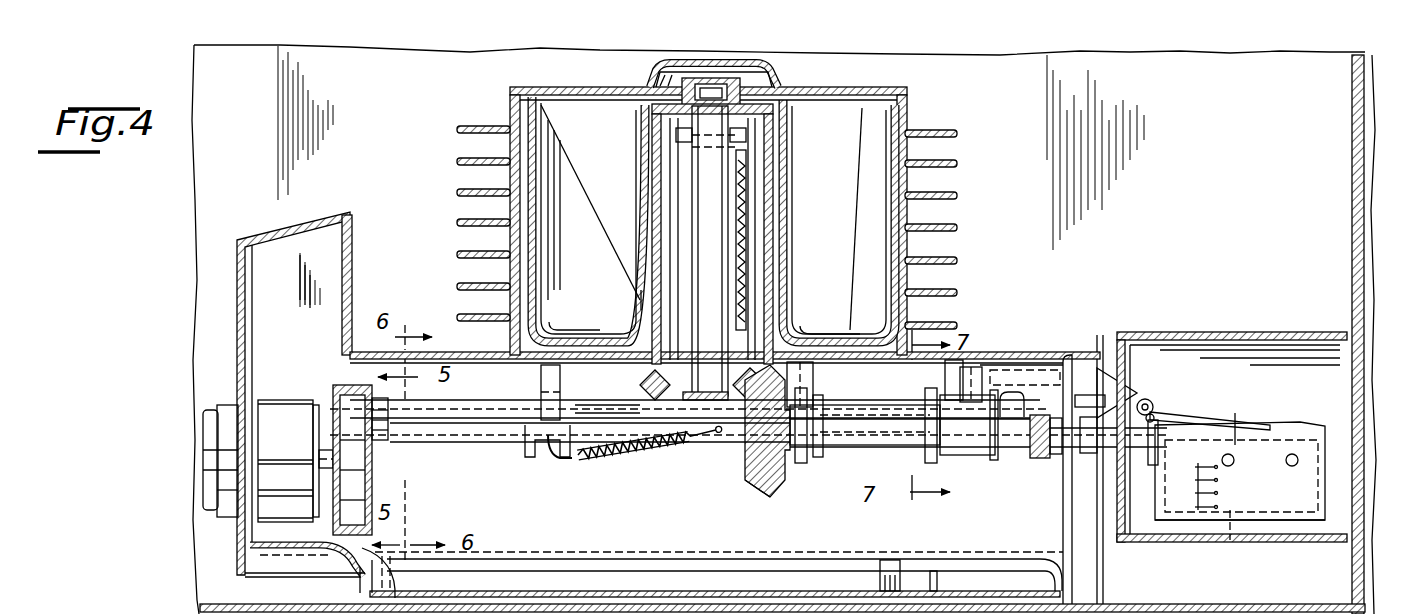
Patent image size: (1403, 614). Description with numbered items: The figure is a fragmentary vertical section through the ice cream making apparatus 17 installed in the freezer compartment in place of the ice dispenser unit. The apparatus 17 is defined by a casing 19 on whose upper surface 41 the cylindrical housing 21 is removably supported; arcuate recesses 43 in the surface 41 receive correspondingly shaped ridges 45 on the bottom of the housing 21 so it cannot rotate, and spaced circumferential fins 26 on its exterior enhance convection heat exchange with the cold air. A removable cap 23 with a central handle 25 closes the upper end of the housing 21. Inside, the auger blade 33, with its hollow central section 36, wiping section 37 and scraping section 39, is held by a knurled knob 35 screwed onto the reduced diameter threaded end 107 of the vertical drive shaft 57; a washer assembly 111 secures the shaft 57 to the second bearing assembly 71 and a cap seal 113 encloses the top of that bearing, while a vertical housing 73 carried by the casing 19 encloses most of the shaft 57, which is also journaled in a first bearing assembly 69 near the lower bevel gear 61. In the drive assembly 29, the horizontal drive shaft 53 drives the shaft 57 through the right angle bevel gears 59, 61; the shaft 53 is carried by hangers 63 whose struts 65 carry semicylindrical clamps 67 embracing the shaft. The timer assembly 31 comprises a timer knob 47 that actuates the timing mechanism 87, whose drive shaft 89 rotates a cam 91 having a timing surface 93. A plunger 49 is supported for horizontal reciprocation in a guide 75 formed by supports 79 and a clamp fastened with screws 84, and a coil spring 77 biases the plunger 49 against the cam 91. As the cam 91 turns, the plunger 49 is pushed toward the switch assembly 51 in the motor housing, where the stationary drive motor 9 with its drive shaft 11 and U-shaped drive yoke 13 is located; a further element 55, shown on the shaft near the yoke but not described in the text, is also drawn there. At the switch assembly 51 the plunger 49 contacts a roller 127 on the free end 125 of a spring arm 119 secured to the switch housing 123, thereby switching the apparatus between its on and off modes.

The drive motor 9 is at (1180, 510).
The drive shaft 11 is at (1153, 450).
The drive yoke 13 is at (1068, 380).
The apparatus 17 is at (1042, 338).
The casing 19 is at (1032, 353).
The cylindrical housing 21 is at (910, 180).
The cap 23 is at (812, 92).
The handle 25 is at (700, 62).
The fins 26 is at (458, 132).
The drive assembly 29 is at (735, 471).
The timer assembly 31 is at (487, 448).
The auger blade 33 is at (565, 150).
The knurled knob 35 is at (740, 92).
The hollow central section 36 is at (640, 300).
The wiping section 37 is at (575, 170).
The scraping section 39 is at (868, 185).
The upper surface 41 is at (450, 352).
The arcuate-shaped recesses 43 is at (848, 338).
The ridges 45 is at (580, 326).
The timer knob 47 is at (208, 420).
The plunger 49 is at (1122, 392).
The switch assembly 51 is at (1175, 425).
The horizontal drive shaft 53 is at (835, 450).
The nut 55 is at (1037, 460).
The vertical drive shaft 57 is at (698, 236).
The bevel gear 59 is at (748, 488).
The bevel gear 61 is at (648, 410).
The hangers 63 is at (940, 410).
The struts 65 is at (972, 398).
The semicylindrical-shaped clamps 67 is at (790, 455).
The first bearing assembly 69 is at (748, 310).
The second bearing assembly 71 is at (766, 218).
The vertical housing 73 is at (752, 280).
The guide 75 is at (523, 455).
The coil spring 77 is at (610, 458).
The supports 79 is at (542, 388).
The screws 84 is at (558, 455).
The timing mechanism 87 is at (288, 400).
The drive shaft 89 is at (322, 455).
The cam 91 is at (378, 470).
The timing surface 93 is at (372, 500).
The threaded end 107 is at (700, 93).
The washer assembly 111 is at (678, 135).
The cap seal 113 is at (748, 134).
The spring arm 119 is at (1237, 412).
The switch housing 123 is at (1238, 520).
The free end 125 is at (1160, 415).
The roller 127 is at (1148, 400).